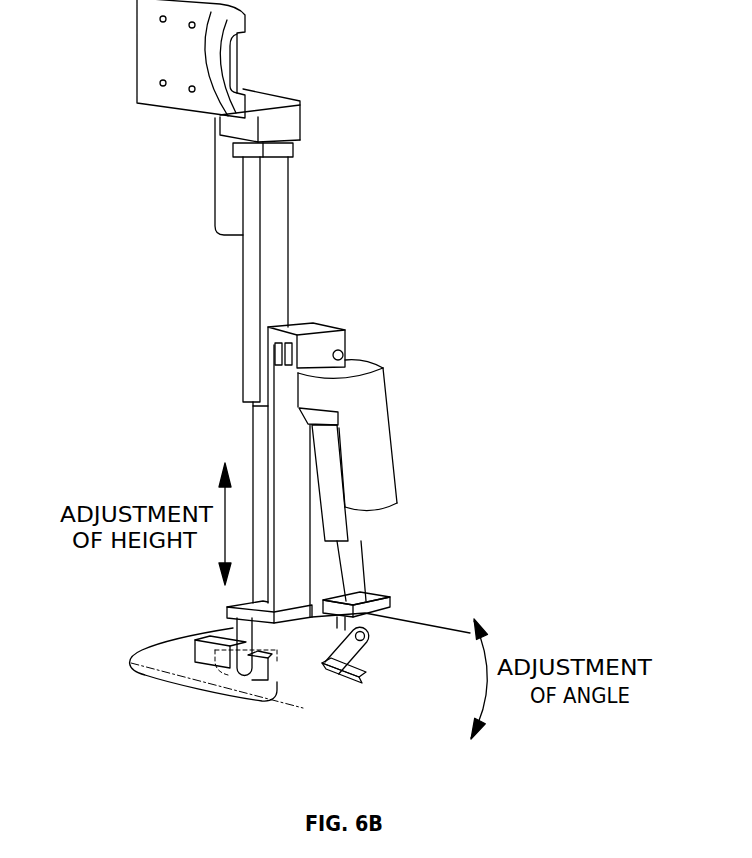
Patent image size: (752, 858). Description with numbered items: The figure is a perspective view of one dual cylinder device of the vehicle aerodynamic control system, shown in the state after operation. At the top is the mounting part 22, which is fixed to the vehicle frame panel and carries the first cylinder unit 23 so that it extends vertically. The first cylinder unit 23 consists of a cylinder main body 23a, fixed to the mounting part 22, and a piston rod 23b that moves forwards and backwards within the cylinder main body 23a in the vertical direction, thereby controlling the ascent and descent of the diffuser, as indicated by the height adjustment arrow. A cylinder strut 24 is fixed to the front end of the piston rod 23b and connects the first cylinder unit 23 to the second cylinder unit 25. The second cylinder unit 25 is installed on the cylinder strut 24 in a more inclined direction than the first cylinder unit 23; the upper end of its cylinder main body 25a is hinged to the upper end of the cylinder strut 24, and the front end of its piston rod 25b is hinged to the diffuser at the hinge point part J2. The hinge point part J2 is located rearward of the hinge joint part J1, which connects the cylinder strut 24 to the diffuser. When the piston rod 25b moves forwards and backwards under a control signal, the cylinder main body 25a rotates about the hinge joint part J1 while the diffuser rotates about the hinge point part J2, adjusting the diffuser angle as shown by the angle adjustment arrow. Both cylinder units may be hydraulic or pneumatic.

The mounting part 22 is at (145, 57).
The first cylinder unit 23 is at (243, 271).
The cylinder main body 23a is at (243, 345).
The piston rod 23b is at (255, 443).
The cylinder strut 24 is at (288, 603).
The second cylinder unit 25 is at (372, 525).
The cylinder main body 25a is at (328, 465).
The piston rod 25b is at (355, 572).
The hinge joint part J1 is at (240, 697).
The hinge point part J2 is at (361, 636).